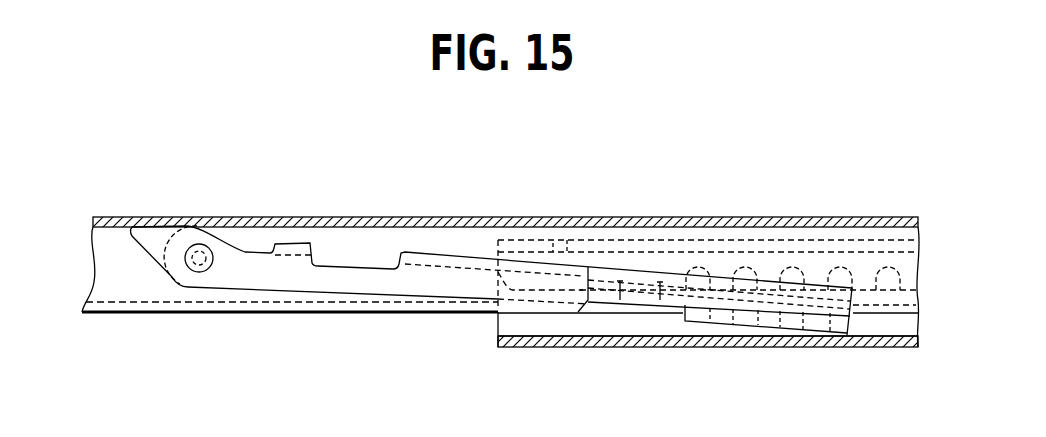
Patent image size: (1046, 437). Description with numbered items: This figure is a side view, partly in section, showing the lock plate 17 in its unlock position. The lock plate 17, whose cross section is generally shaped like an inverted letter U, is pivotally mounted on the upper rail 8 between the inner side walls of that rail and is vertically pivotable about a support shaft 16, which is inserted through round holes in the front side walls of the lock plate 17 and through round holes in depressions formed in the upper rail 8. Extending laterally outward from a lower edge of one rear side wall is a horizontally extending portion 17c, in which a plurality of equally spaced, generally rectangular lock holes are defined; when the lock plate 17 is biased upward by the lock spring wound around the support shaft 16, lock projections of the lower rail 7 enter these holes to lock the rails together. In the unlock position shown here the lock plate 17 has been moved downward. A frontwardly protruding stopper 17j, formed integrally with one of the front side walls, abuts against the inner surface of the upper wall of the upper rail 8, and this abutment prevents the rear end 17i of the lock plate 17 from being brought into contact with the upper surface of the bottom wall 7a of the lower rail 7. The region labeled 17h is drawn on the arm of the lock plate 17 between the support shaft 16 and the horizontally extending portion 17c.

The lower rail 7 is at (522, 348).
The bottom wall of the lower rail 7a is at (610, 336).
The upper rail 8 is at (367, 216).
The support shaft 16 is at (201, 244).
The lock plate 17 is at (460, 254).
The horizontally extending portion 17c is at (768, 348).
The lever arm 17h is at (243, 278).
The rear end of the lock plate 17i is at (845, 346).
The frontwardly protruding stopper 17j is at (157, 238).